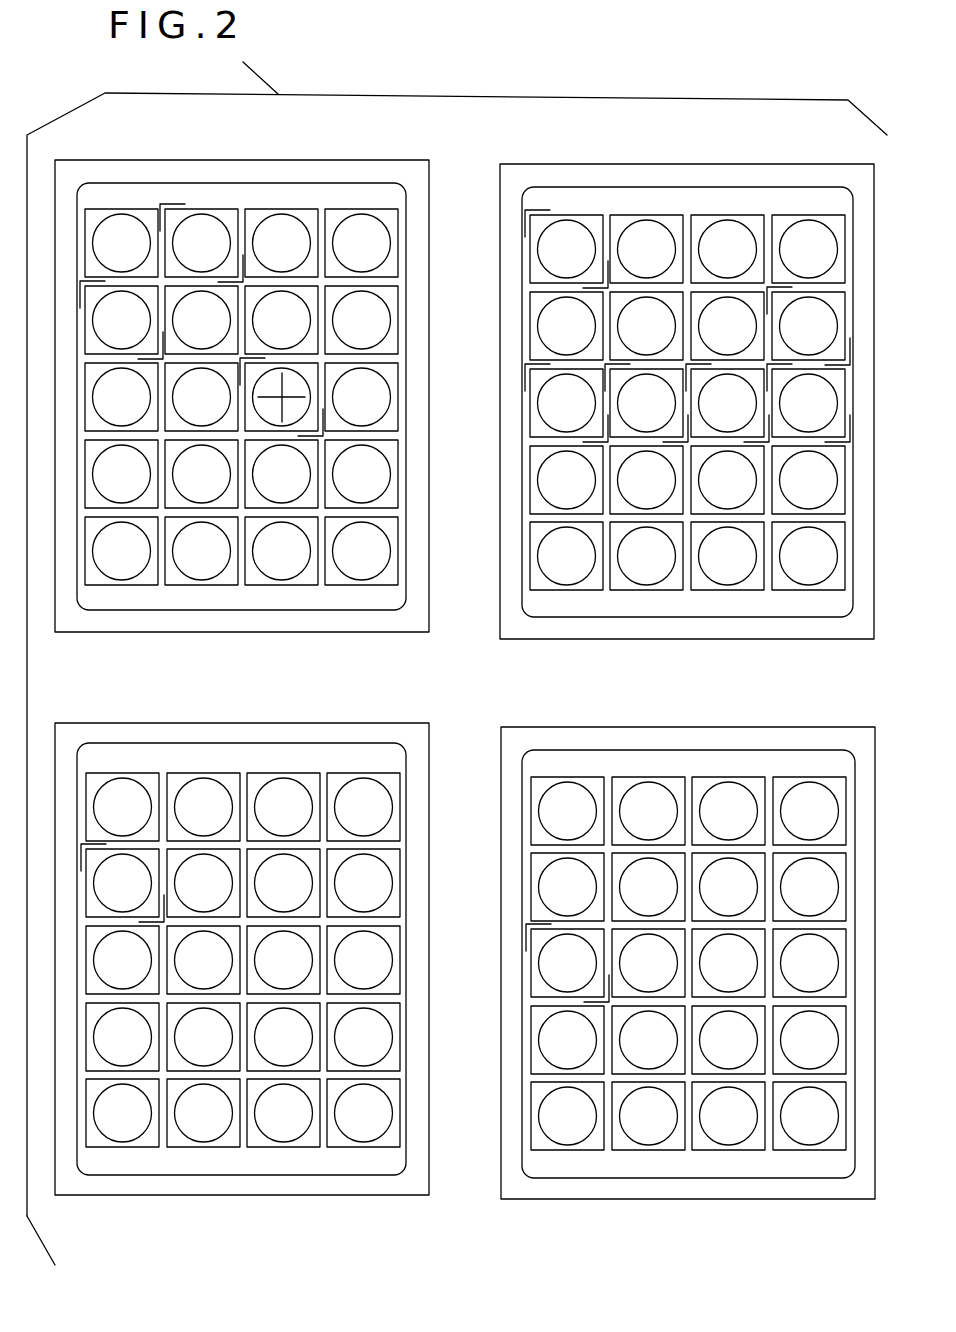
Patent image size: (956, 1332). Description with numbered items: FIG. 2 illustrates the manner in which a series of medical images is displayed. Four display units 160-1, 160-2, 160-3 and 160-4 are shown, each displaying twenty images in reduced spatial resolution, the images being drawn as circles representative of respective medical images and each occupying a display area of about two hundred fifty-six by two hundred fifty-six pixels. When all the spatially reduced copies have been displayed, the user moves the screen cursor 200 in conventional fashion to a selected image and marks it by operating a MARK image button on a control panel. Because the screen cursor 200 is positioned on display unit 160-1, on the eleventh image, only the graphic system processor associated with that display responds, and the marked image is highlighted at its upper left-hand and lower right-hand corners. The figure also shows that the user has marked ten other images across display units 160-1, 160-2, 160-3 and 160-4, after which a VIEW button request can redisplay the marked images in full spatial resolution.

The display unit 160-1 is at (244, 198).
The display unit 160-2 is at (665, 198).
The display unit 160-3 is at (246, 763).
The display unit 160-4 is at (667, 763).
The screen cursor 200 is at (290, 395).